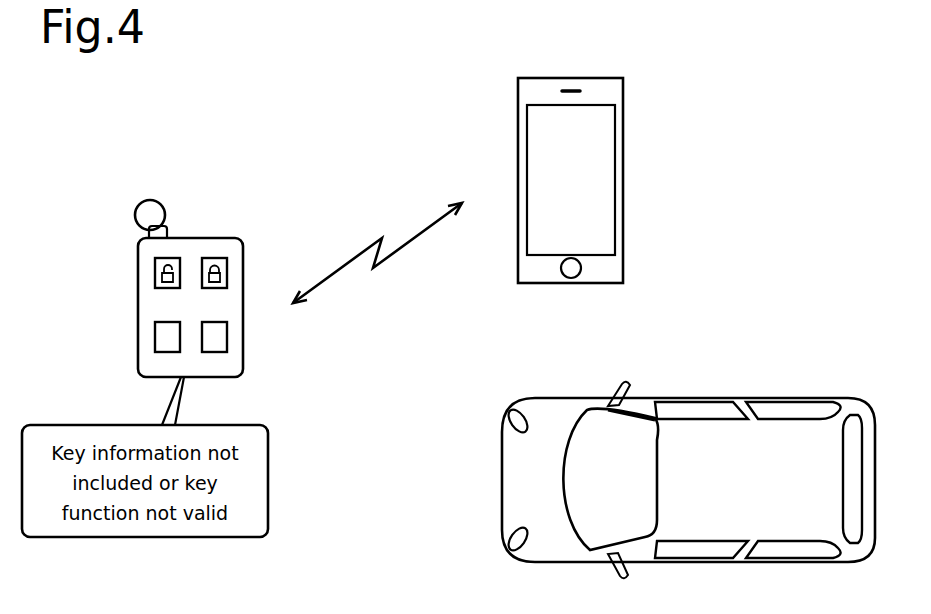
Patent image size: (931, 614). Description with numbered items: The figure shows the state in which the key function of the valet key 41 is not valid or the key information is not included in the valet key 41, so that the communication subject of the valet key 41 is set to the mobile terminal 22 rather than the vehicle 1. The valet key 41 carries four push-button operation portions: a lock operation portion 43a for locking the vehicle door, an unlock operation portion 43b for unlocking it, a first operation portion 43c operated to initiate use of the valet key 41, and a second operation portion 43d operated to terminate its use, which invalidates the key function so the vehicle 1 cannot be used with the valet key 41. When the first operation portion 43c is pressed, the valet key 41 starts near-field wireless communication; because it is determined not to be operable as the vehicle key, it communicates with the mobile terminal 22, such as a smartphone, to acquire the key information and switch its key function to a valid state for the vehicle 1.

The vehicle 1 is at (687, 398).
The mobile terminal 22 is at (603, 78).
The valet key 41 is at (187, 237).
The lock operation portion 43a is at (217, 258).
The unlock operation portion 43b is at (155, 268).
The first operation portion 43c is at (155, 337).
The second operation portion 43d is at (227, 341).